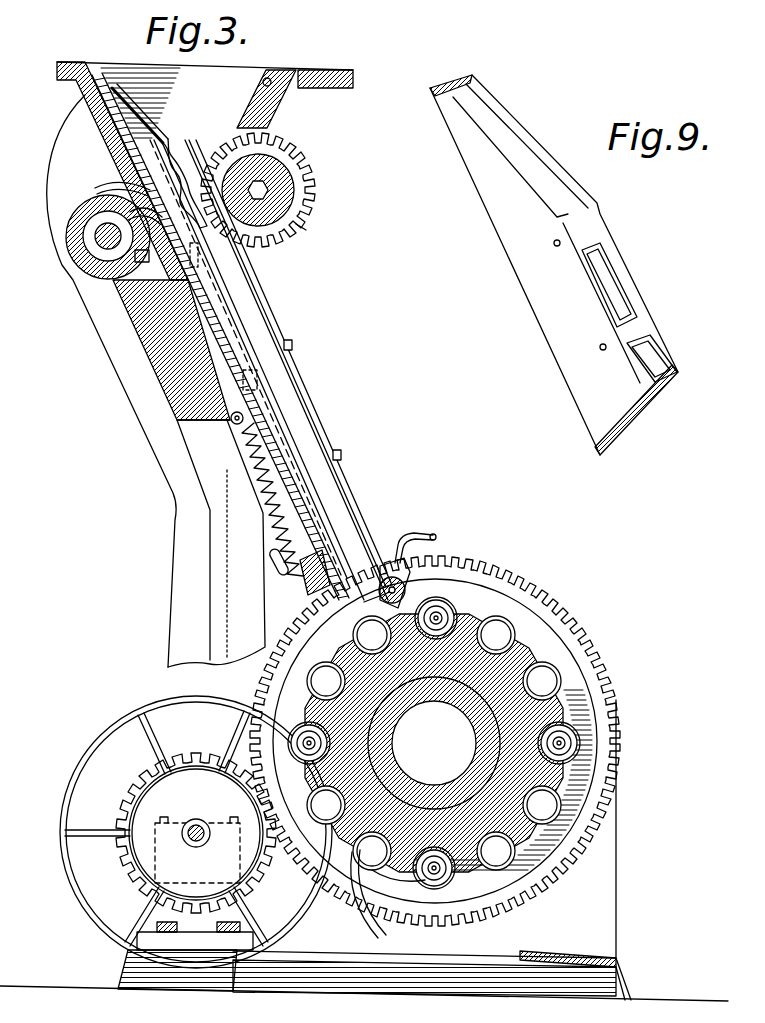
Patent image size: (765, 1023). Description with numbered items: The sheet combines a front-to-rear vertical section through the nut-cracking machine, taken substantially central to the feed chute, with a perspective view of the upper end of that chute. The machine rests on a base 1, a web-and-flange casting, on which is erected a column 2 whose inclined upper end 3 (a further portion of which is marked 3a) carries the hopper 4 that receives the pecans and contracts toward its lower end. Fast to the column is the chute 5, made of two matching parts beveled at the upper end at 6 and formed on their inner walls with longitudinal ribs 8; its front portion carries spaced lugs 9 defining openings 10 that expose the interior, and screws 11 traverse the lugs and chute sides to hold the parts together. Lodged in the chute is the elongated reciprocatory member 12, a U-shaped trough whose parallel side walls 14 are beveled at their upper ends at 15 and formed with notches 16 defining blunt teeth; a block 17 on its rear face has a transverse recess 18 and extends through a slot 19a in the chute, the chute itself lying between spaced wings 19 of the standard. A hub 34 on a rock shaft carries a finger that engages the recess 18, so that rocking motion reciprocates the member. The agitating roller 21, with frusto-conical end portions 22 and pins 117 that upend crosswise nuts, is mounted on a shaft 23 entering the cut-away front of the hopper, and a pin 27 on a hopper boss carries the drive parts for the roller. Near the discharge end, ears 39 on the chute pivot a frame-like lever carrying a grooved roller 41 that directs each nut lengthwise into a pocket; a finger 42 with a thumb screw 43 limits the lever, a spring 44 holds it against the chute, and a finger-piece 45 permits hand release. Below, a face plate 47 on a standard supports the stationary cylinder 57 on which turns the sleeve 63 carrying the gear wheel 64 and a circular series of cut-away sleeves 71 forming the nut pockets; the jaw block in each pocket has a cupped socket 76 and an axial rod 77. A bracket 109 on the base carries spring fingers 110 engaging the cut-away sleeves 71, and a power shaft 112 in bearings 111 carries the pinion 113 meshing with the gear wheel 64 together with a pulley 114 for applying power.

In FIG. 3, the base 1 is at (262, 980).
In FIG. 3, the column 2 is at (178, 636).
In FIG. 3, the inclined upper end 3 is at (107, 342).
In FIG. 3, the frame portion 3a is at (211, 240).
In FIG. 3, the hopper 4 is at (205, 100).
In FIG. 3, the chute 5 is at (220, 361).
In FIG. 9, the chute 5 is at (520, 273).
In FIG. 9, the beveled upper end 6 is at (558, 162).
In FIG. 9, the longitudinal ribs 8 is at (477, 85).
In FIG. 3, the lugs 9 is at (292, 347).
In FIG. 9, the lugs 9 is at (597, 232).
In FIG. 3, the openings 10 is at (320, 394).
In FIG. 9, the openings 10 is at (613, 290).
In FIG. 9, the screws 11 is at (554, 241).
In FIG. 3, the reciprocatory member 12 is at (300, 432).
In FIG. 3, the side walls 14 is at (230, 298).
In FIG. 3, the beveled upper ends 15 is at (163, 141).
In FIG. 3, the notches 16 is at (169, 190).
In FIG. 3, the block 17 is at (140, 217).
In FIG. 3, the transverse recess 18 is at (141, 257).
In FIG. 3, the wings 19 is at (123, 183).
In FIG. 3, the slot a is at (104, 155).
In FIG. 3, the agitating roller 21 is at (290, 158).
In FIG. 3, the expanding end portions 22 is at (293, 188).
In FIG. 3, the shaft 23 is at (300, 228).
In FIG. 3, the pin 27 is at (100, 238).
In FIG. 3, the hub 34 is at (123, 253).
In FIG. 3, the ears 39 is at (356, 575).
In FIG. 3, the roller 41 is at (403, 580).
In FIG. 3, the finger 42 is at (303, 586).
In FIG. 3, the thumb screw 43 is at (276, 563).
In FIG. 3, the spring 44 is at (262, 478).
In FIG. 3, the finger-piece 45 is at (421, 532).
In FIG. 3, the face plate 47 is at (570, 620).
In FIG. 3, the cylinder 57 is at (460, 700).
In FIG. 3, the sleeve 63 is at (420, 743).
In FIG. 3, the gear wheel 64 is at (600, 667).
In FIG. 3, the sleeves 71 is at (512, 633).
In FIG. 3, the cup 76 is at (438, 615).
In FIG. 3, the rod 77 is at (450, 603).
In FIG. 3, the bracket 109 is at (350, 920).
In FIG. 3, the spring fingers 110 is at (425, 878).
In FIG. 3, the bearings 111 is at (150, 907).
In FIG. 3, the power shaft 112 is at (193, 847).
In FIG. 3, the pinion 113 is at (120, 862).
In FIG. 3, the pulley 114 is at (110, 722).
In FIG. 3, the pins 117 is at (270, 193).